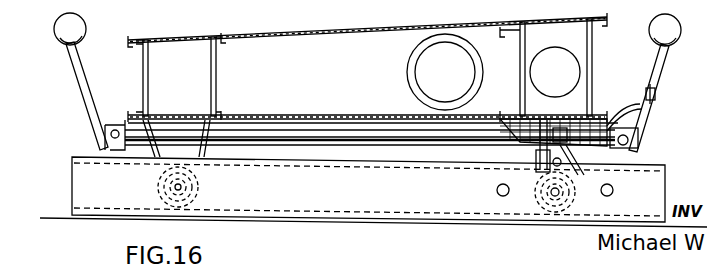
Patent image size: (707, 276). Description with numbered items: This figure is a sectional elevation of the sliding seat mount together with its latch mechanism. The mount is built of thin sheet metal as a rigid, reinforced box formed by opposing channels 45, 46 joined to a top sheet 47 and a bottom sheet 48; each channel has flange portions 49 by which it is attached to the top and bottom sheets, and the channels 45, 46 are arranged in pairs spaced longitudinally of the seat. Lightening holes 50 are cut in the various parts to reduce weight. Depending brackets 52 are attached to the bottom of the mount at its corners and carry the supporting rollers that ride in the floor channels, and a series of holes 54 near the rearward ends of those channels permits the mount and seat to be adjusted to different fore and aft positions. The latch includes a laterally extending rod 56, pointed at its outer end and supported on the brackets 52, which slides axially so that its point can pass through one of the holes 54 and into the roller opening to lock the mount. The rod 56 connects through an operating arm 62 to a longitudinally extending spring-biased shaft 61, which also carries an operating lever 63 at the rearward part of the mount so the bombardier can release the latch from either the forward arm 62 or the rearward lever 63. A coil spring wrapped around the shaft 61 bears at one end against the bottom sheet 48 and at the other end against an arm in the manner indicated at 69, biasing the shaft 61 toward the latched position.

The channel 45 is at (143, 79).
The channel 46 is at (216, 80).
The top sheet 47 is at (281, 33).
The bottom sheet 48 is at (292, 116).
The flange portions 49 is at (133, 40).
The lightening holes 50 is at (440, 43).
The depending brackets 52 is at (100, 152).
The holes 54 is at (612, 190).
The rod 56 is at (632, 108).
The spring-biased shaft 61 is at (350, 138).
The operating arm 62 is at (83, 76).
The operating lever 63 is at (664, 73).
The spring end engagement 69 is at (502, 161).